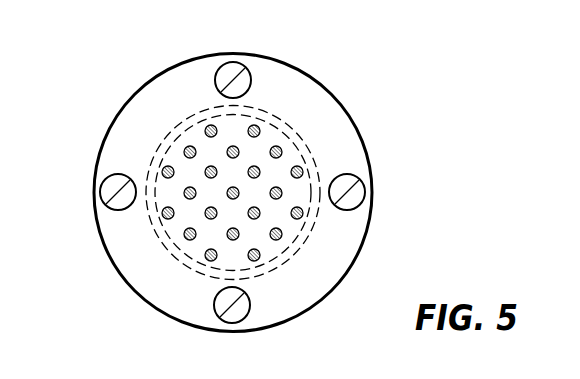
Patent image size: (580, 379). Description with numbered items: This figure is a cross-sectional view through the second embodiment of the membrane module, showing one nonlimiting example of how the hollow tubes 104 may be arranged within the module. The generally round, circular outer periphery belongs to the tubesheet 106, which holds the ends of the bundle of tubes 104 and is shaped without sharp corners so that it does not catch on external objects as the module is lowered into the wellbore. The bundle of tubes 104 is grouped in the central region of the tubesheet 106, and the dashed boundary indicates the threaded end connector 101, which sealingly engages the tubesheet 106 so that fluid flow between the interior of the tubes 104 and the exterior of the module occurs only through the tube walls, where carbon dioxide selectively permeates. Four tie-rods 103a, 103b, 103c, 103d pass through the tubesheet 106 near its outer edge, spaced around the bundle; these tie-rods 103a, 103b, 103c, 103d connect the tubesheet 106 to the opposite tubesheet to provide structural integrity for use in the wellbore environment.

The threaded end connector 101 is at (298, 125).
The tie-rod 103a is at (360, 180).
The tie-rod 103b is at (238, 62).
The tie-rod 103c is at (104, 182).
The tie-rod 103d is at (237, 323).
The tubes 104 is at (206, 127).
The tubesheet 106 is at (302, 86).